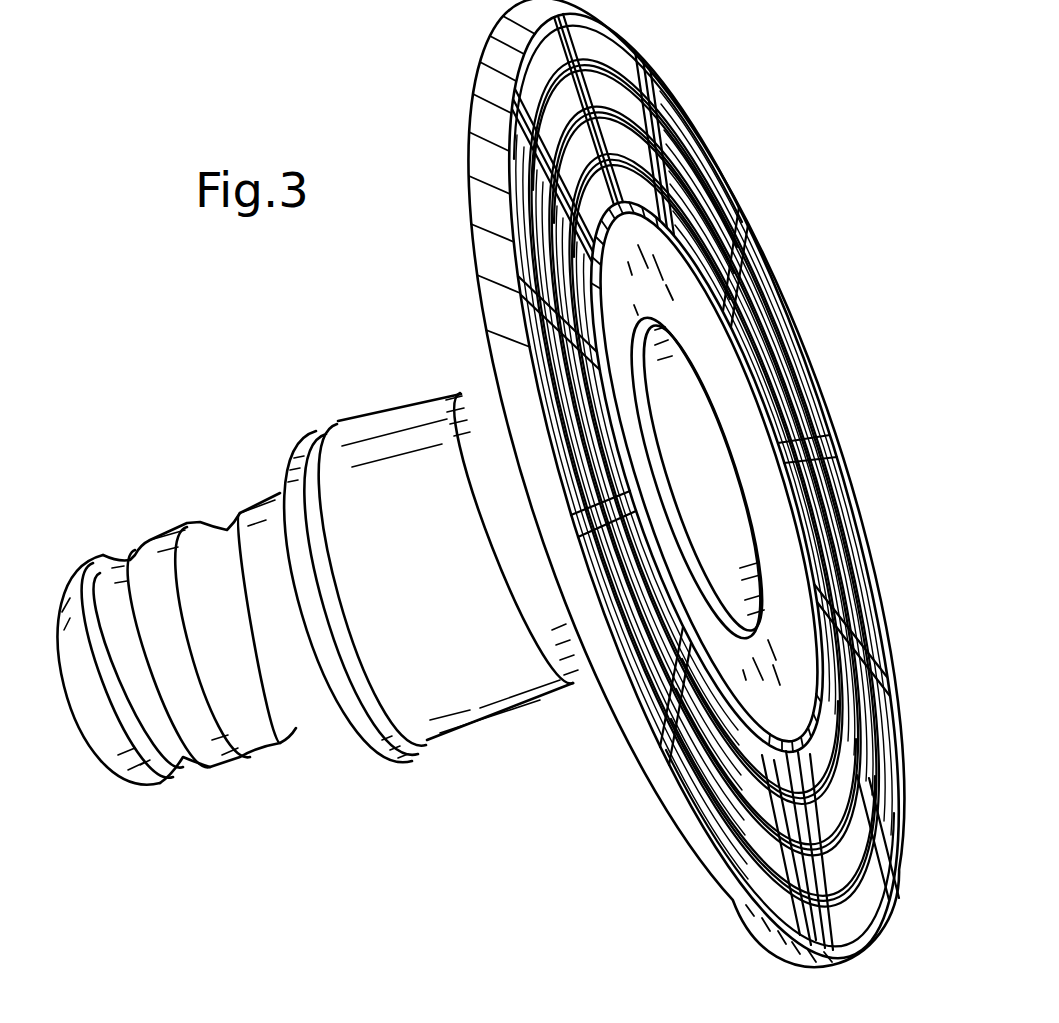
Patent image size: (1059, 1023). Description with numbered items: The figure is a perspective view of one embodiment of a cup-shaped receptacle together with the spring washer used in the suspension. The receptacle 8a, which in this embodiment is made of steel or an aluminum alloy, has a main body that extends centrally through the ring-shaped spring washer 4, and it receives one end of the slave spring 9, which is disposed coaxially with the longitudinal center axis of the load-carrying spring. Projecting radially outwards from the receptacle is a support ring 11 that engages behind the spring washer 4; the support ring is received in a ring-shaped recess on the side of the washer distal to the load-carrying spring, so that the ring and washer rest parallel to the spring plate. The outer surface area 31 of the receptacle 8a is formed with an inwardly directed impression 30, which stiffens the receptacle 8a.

The spring washer 4 is at (838, 497).
The support ring 11 is at (728, 438).
The receptacle 8a is at (461, 671).
The slave spring 9 is at (115, 547).
The impression 30 is at (477, 387).
The outer surface area 31 is at (383, 398).